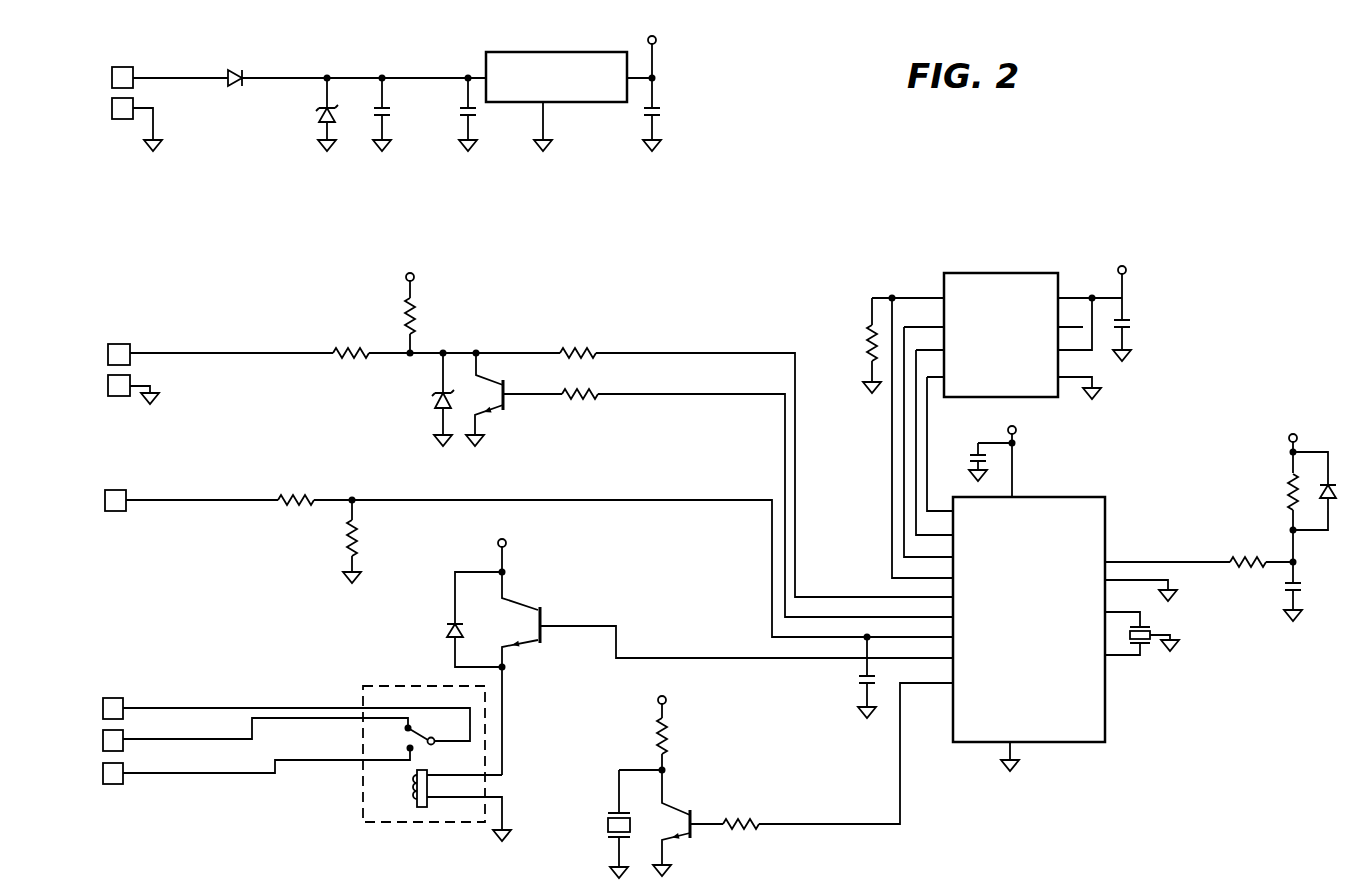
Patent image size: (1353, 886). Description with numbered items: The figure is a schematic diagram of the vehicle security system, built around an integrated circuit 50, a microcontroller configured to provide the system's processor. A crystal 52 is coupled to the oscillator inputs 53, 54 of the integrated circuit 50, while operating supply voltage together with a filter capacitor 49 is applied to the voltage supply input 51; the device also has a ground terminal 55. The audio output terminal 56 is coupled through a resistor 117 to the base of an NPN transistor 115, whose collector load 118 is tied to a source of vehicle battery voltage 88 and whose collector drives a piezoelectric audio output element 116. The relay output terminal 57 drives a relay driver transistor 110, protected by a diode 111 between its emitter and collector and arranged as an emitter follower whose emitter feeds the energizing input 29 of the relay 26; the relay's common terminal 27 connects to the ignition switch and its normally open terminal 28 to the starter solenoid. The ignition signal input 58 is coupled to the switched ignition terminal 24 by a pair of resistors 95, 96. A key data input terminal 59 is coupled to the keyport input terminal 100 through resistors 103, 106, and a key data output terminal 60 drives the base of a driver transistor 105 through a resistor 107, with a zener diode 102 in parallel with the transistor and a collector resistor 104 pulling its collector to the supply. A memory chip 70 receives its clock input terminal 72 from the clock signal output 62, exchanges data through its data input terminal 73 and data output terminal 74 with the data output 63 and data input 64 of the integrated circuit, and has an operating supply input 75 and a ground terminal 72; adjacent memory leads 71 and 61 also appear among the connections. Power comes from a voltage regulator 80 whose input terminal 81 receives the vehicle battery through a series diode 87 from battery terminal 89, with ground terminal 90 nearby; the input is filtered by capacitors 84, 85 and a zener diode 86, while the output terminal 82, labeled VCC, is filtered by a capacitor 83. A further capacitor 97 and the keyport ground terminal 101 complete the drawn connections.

The switched ignition terminal 24 is at (105, 500).
The relay 26 is at (362, 802).
The common terminal 27 is at (365, 712).
The normally open terminal 28 is at (356, 768).
The energizing input 29 is at (504, 772).
The filter capacitor 49 is at (976, 458).
The integrated circuit 50 is at (1084, 496).
The voltage supply input 51 is at (1016, 478).
The crystal 52 is at (1154, 634).
The oscillator input 53 is at (1109, 662).
The oscillator input 54 is at (1108, 602).
The ground terminal 55 is at (1018, 754).
The audio output terminal 56 is at (934, 688).
The relay output terminal 57 is at (834, 660).
The ignition signal input 58 is at (772, 544).
The key data input terminal 59 is at (834, 597).
The key data output terminal 60 is at (782, 602).
The memory lead 61 is at (890, 451).
The clock signal output 62 is at (902, 474).
The data output 63 is at (914, 496).
The data input 64 is at (930, 446).
The memory chip 70 is at (1028, 272).
The memory power lead 71 is at (932, 298).
The clock input terminal 72 is at (932, 324).
The data input terminal 73 is at (930, 346).
The data output terminal 74 is at (928, 370).
The operating supply input 75 is at (1062, 296).
The voltage regulator 80 is at (554, 52).
The input terminal 81 is at (482, 74).
The output terminal 82 is at (642, 74).
The filter capacitor 83 is at (667, 112).
The filter capacitor 84 is at (460, 114).
The filter capacitor 85 is at (375, 115).
The zener diode 86 is at (319, 110).
The diode 87 is at (225, 68).
The source of vehicle battery voltage 88 is at (667, 702).
The power input terminal 89 is at (112, 77).
The ground terminal 90 is at (112, 108).
The resistor 95 is at (306, 492).
The resistor 96 is at (359, 537).
The capacitor 97 is at (842, 684).
The input terminal 100 is at (108, 352).
The ground terminal 101 is at (108, 386).
The zener diode 102 is at (435, 403).
The resistor 103 is at (356, 348).
The collector resistor 104 is at (414, 320).
The driver transistor 105 is at (503, 412).
The resistor 106 is at (582, 350).
The resistor 107 is at (590, 391).
The relay driver transistor 110 is at (520, 606).
The protective diode 111 is at (453, 629).
The NPN transistor 115 is at (682, 808).
The piezoelectric audio output element 116 is at (608, 808).
The resistor 117 is at (749, 806).
The collector load 118 is at (672, 742).